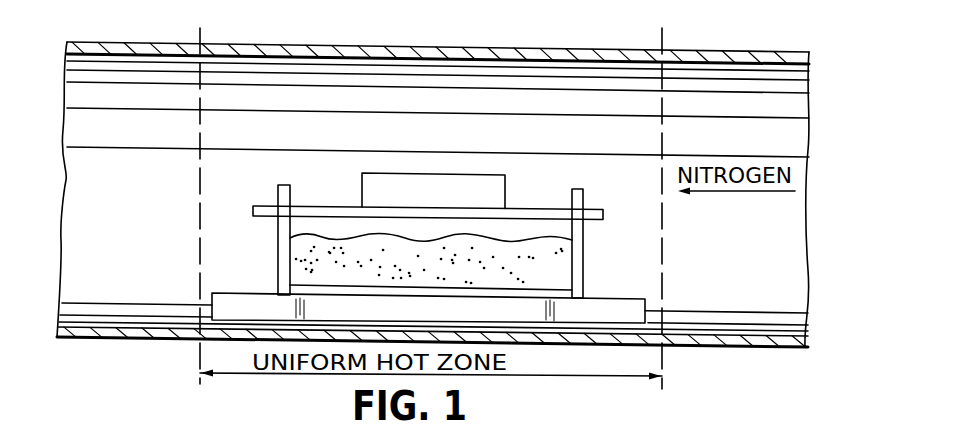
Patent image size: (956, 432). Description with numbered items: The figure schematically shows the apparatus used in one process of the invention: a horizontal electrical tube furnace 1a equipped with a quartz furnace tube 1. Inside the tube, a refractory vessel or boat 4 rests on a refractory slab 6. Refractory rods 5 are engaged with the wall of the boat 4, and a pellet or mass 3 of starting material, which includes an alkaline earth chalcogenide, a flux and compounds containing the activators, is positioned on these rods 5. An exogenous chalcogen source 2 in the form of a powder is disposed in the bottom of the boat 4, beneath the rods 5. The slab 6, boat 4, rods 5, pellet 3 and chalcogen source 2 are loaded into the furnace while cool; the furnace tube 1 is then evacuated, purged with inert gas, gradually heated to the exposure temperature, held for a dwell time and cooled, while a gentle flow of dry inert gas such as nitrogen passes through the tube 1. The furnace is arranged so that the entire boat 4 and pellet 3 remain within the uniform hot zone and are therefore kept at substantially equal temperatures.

The quartz furnace tube 1 is at (698, 347).
The horizontal electrical tube furnace 1a is at (755, 46).
The exogenous chalcogen source 2 is at (558, 268).
The pellet or mass of starting material 3 is at (478, 182).
The refractory vessel or boat 4 is at (402, 241).
The refractory rods 5 is at (532, 210).
The refractory slab 6 is at (597, 304).